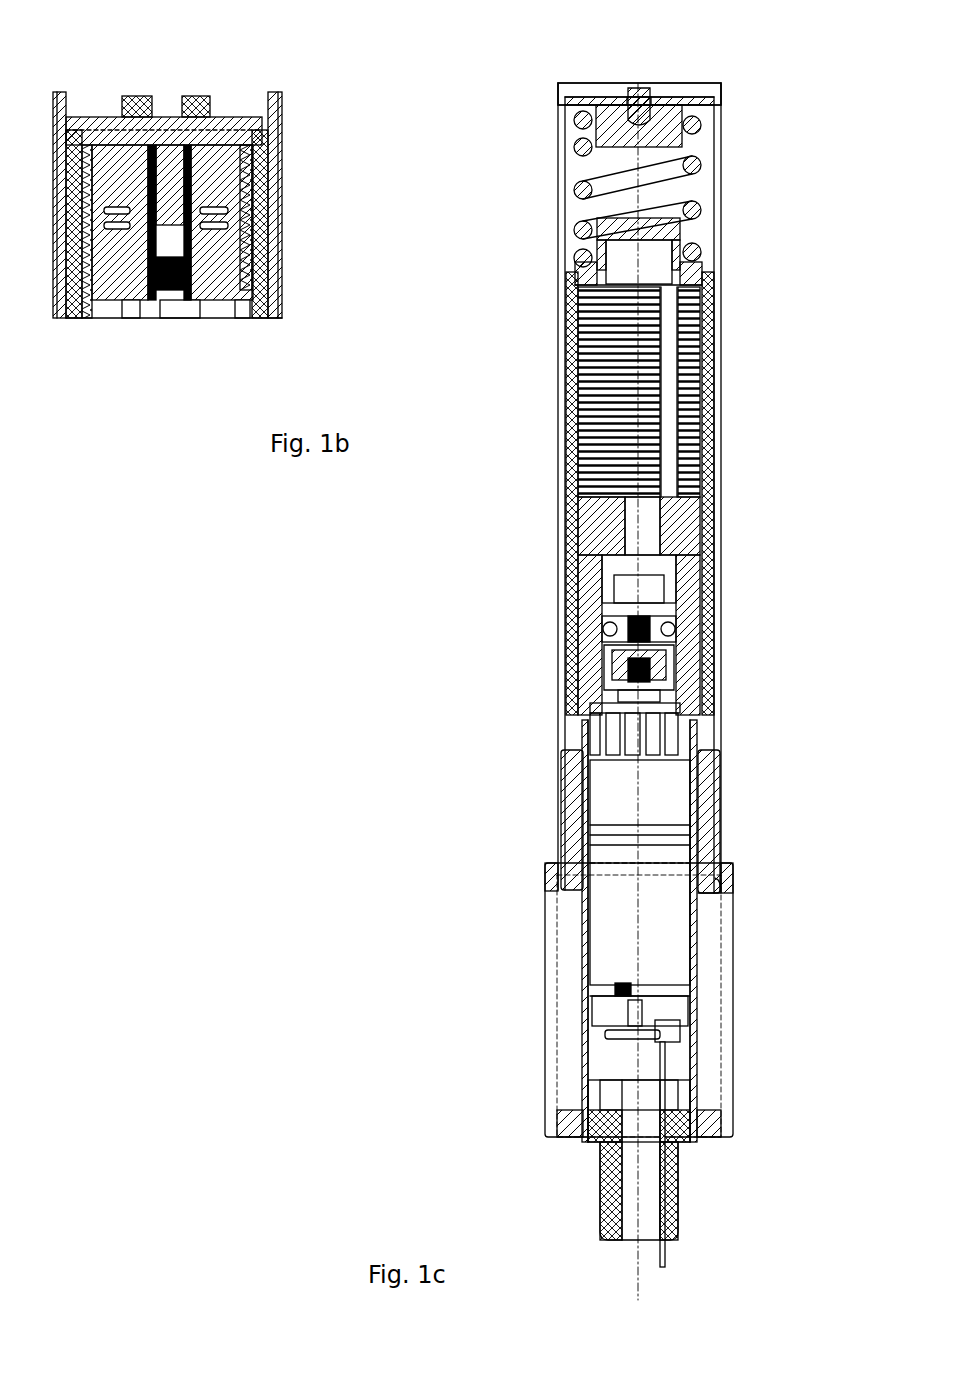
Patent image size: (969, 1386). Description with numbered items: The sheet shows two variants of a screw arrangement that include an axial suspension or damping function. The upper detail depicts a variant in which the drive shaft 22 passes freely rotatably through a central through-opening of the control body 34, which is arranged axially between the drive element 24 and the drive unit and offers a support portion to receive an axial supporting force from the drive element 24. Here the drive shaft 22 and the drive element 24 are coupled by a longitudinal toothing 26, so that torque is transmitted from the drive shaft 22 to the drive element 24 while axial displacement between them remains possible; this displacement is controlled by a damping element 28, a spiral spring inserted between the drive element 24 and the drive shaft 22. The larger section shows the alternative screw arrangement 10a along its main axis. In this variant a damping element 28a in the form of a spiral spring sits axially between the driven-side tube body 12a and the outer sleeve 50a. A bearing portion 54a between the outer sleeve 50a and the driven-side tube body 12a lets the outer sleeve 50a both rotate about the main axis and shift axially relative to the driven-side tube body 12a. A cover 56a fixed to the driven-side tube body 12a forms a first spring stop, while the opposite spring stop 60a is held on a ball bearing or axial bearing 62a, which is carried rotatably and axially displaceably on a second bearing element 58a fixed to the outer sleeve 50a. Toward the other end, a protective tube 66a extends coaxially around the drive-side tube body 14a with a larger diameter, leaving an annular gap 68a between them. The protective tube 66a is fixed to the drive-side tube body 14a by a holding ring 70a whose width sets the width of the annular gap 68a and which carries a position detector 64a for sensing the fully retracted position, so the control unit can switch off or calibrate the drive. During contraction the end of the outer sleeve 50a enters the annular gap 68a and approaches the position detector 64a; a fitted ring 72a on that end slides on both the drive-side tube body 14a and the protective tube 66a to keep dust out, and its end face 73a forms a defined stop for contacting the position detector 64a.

In FIG. 1B, the drive shaft 22 is at (152, 150).
In FIG. 1B, the longitudinal toothing 26 is at (188, 150).
In FIG. 1B, the drive element 24 is at (242, 160).
In FIG. 1B, the damping element 28 is at (228, 226).
In FIG. 1B, the control body 34 is at (258, 258).
In FIG. 1C, the screw arrangement 10a is at (540, 70).
In FIG. 1C, the bearing portion 54a is at (622, 68).
In FIG. 1C, the ball bearing or axial bearing 62a is at (680, 98).
In FIG. 1C, the second bearing element 58a is at (705, 80).
In FIG. 1C, the outer sleeve 50a is at (715, 98).
In FIG. 1C, the spring stop 60a is at (670, 130).
In FIG. 1C, the damping element 28a is at (700, 168).
In FIG. 1C, the cover 56a is at (682, 235).
In FIG. 1C, the driven-side tube body 12a is at (716, 328).
In FIG. 1C, the fitted ring 72a is at (708, 790).
In FIG. 1C, the end face 73a is at (712, 900).
In FIG. 1C, the annular gap 68a is at (710, 938).
In FIG. 1C, the protective tube 66a is at (732, 982).
In FIG. 1C, the drive-side tube body 14a is at (698, 1048).
In FIG. 1C, the position detector 64a is at (710, 1090).
In FIG. 1C, the holding ring 70a is at (715, 1138).